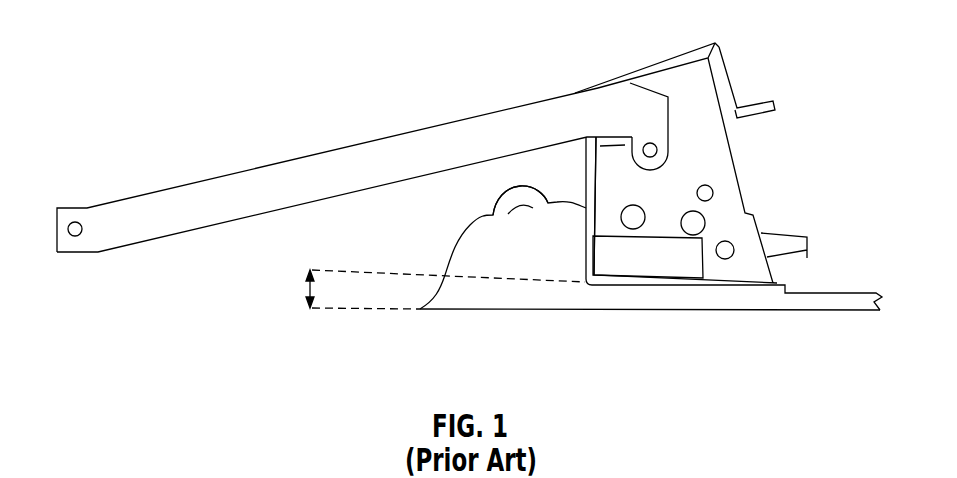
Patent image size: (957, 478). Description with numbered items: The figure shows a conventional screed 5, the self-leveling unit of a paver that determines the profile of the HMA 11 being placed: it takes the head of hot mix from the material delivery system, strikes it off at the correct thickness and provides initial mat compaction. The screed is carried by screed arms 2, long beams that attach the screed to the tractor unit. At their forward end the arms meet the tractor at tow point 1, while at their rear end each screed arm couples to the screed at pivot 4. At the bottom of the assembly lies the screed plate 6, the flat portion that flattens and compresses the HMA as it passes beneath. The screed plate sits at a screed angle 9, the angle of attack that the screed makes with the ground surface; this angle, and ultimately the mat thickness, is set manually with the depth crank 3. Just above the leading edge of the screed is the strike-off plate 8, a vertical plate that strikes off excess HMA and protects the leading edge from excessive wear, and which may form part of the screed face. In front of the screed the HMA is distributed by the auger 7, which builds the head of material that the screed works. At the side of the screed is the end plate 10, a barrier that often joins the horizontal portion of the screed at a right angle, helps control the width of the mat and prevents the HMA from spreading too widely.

The tow point 1 is at (71, 223).
The screed arms 2 is at (333, 150).
The depth crank 3 is at (717, 43).
The pivot 4 is at (650, 143).
The screed 5 is at (737, 178).
The screed plate 6 is at (732, 287).
The auger 7 is at (493, 215).
The strike-off plate 8 is at (590, 190).
The screed angle 9 is at (306, 288).
The end plate 10 is at (703, 93).
The HMA 11 is at (511, 266).